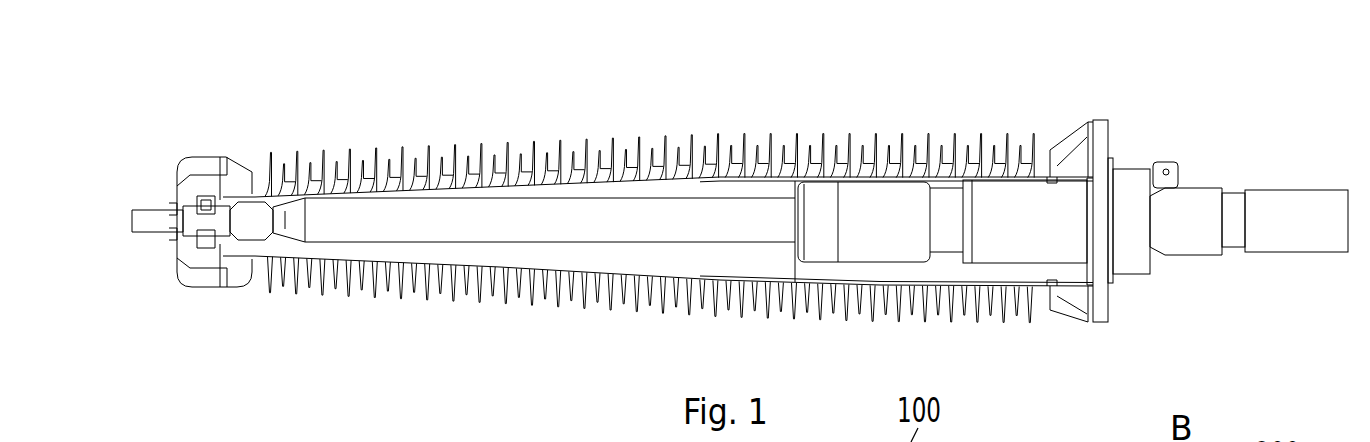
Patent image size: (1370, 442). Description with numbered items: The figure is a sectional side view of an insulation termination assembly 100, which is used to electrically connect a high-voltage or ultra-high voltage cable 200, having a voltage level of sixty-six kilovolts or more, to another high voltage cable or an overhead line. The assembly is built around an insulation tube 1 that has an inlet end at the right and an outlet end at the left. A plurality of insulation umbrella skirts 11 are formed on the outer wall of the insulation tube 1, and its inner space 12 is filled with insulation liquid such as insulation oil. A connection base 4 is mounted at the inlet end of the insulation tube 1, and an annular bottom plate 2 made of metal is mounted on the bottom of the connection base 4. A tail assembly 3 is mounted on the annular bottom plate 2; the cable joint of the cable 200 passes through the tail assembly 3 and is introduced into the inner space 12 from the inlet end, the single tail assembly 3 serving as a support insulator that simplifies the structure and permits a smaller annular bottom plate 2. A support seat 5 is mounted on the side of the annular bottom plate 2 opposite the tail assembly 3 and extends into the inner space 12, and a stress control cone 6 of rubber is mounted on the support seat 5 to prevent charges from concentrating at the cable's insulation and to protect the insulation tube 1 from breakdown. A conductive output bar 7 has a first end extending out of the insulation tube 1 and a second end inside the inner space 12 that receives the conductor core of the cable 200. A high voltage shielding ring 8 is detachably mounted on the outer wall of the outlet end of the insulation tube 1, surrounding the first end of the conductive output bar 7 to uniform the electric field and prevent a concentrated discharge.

The insulation termination assembly 100 is at (735, 201).
The insulation tube 1 is at (458, 265).
The insulation umbrella skirts 11 is at (690, 297).
The inner space 12 is at (677, 196).
The annular bottom plate 2 is at (1103, 133).
The tail assembly 3 is at (1188, 240).
The connection base 4 is at (1090, 122).
The support seat 5 is at (1025, 247).
The stress control cone 6 is at (878, 240).
The conductive output bar 7 is at (148, 223).
The high voltage shielding ring 8 is at (204, 165).
The cable 200 is at (1290, 202).